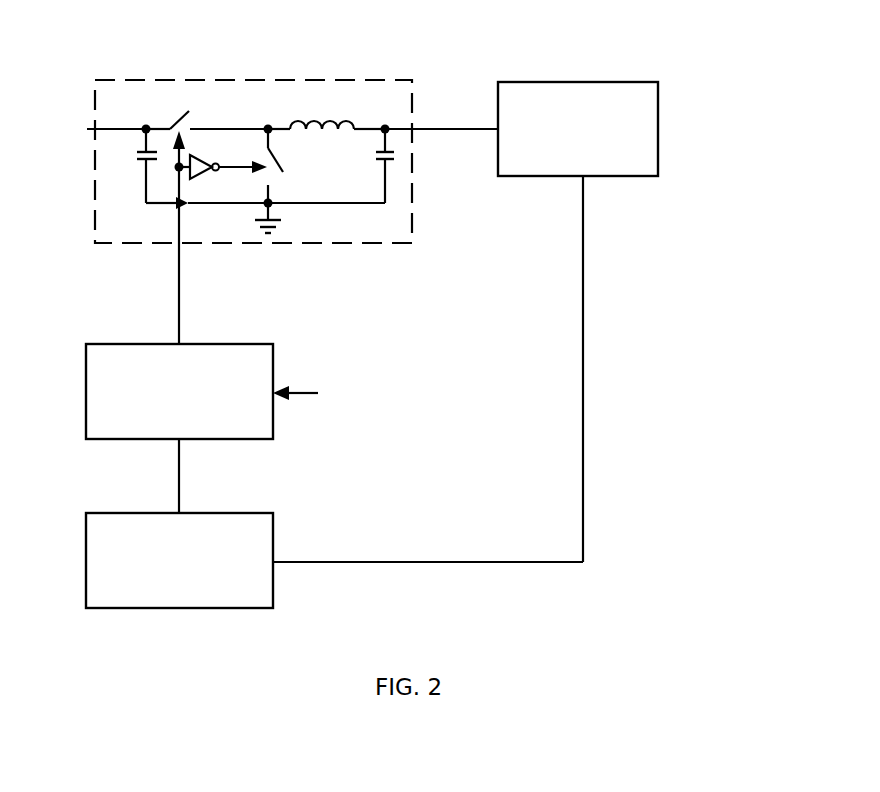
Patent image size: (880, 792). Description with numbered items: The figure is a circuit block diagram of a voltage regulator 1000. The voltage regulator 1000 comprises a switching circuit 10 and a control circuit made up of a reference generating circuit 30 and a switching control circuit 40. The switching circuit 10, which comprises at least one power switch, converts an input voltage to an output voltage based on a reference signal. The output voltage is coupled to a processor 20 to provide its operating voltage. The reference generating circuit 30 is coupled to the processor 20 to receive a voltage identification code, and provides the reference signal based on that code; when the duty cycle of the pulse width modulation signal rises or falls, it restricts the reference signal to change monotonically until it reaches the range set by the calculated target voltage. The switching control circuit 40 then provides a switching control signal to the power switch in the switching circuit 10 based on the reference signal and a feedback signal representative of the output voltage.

The voltage regulator 1000 is at (697, 72).
The switching circuit 10 is at (297, 80).
The processor 20 is at (540, 82).
The reference generating circuit 30 is at (242, 513).
The switching control circuit 40 is at (242, 344).